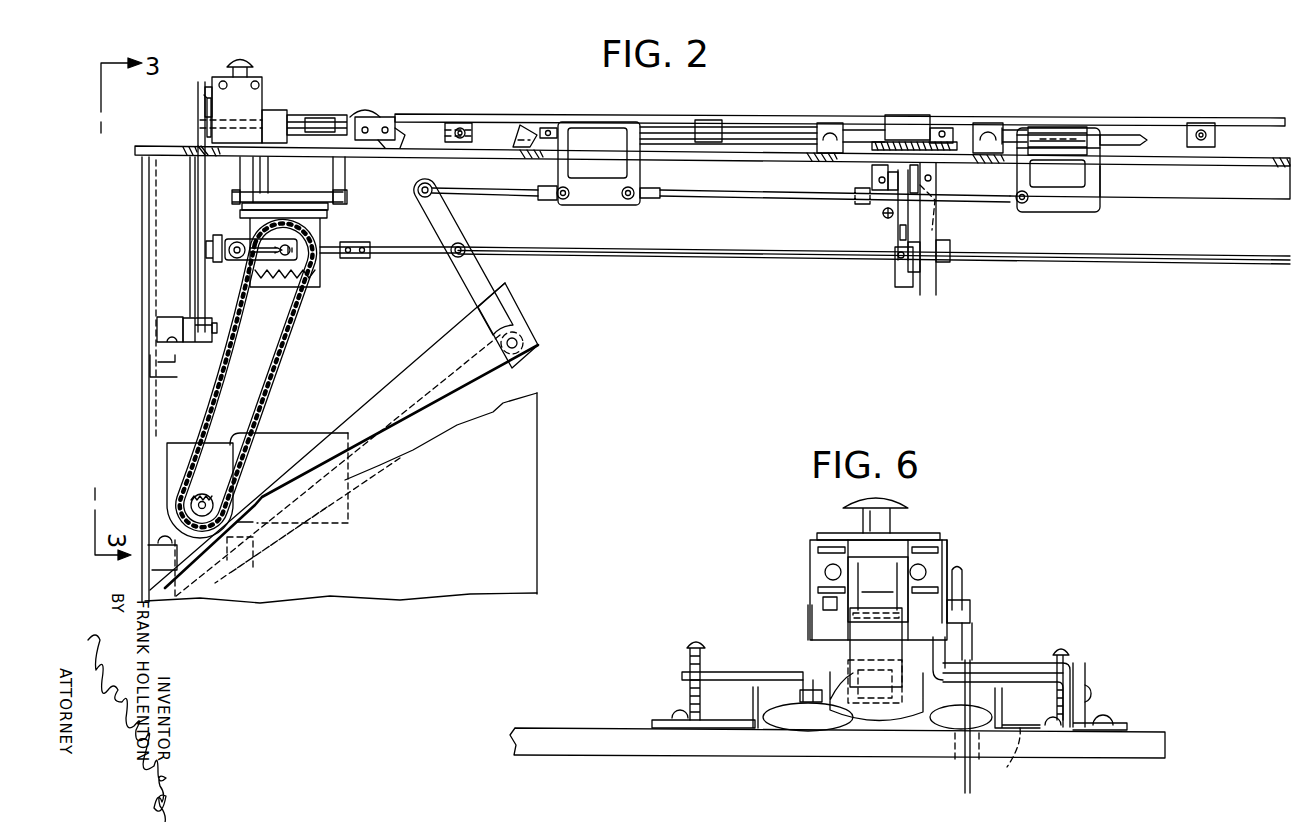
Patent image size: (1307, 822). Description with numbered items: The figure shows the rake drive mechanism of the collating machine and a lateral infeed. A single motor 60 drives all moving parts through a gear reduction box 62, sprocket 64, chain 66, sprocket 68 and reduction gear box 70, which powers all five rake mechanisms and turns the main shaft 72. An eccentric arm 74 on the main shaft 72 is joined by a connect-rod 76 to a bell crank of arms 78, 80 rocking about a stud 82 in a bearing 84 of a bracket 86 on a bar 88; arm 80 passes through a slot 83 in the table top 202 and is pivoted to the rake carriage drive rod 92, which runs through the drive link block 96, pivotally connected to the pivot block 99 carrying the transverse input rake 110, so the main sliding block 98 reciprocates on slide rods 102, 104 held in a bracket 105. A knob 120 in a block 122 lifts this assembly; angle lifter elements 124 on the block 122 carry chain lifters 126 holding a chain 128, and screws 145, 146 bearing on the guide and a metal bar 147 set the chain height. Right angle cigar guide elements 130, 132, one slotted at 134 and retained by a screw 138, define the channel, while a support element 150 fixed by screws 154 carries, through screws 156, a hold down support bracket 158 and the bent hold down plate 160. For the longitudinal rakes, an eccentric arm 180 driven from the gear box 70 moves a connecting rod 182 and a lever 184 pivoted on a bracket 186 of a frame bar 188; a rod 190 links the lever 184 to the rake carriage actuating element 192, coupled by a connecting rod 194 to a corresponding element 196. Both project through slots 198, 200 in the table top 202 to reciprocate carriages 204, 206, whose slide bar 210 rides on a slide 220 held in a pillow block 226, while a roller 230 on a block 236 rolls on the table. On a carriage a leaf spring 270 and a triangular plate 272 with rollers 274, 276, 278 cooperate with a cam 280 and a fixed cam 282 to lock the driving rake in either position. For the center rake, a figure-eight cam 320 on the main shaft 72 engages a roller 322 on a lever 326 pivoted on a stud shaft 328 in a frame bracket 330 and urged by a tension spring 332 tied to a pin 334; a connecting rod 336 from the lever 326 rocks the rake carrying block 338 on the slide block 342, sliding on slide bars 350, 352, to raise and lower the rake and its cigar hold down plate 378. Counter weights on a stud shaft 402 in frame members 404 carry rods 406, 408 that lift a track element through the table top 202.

In FIG. 2, the motor 60 is at (350, 433).
In FIG. 2, the gear reduction box 62 is at (170, 482).
In FIG. 2, the sprocket 64 is at (204, 493).
In FIG. 2, the chain 66 is at (270, 377).
In FIG. 2, the sprocket 68 is at (282, 272).
In FIG. 2, the reduction gear box 70 is at (322, 265).
In FIG. 2, the main shaft 72 is at (752, 262).
In FIG. 2, the eccentric arm 74 is at (236, 242).
In FIG. 2, the connect-rod 76 is at (208, 232).
In FIG. 2, the arm 78 is at (210, 282).
In FIG. 2, the arm 80 is at (198, 200).
In FIG. 6, the arm 80 is at (970, 655).
In FIG. 2, the stud 82 is at (212, 345).
In FIG. 2, the elongated slot 83 is at (198, 148).
In FIG. 6, the elongated slot 83 is at (955, 765).
In FIG. 2, the bearing 84 is at (188, 344).
In FIG. 2, the bracket 86 is at (160, 325).
In FIG. 2, the bar 88 is at (150, 363).
In FIG. 2, the rake carriage drive rod 92 is at (207, 110).
In FIG. 6, the rake carriage drive rod 92 is at (963, 582).
In FIG. 2, the drive link block 96 is at (206, 90).
In FIG. 6, the drive link block 96 is at (972, 610).
In FIG. 2, the main sliding block 98 is at (258, 77).
In FIG. 6, the main sliding block 98 is at (940, 533).
In FIG. 6, the pivot block 99 is at (875, 555).
In FIG. 2, the slide rod 102 is at (222, 81).
In FIG. 6, the slide rod 102 is at (924, 570).
In FIG. 2, the slide rod 104 is at (258, 83).
In FIG. 6, the slide rod 104 is at (830, 570).
In FIG. 2, the bracket 105 is at (270, 100).
In FIG. 6, the transverse input rake 110 is at (825, 730).
In FIG. 2, the knob 120 is at (244, 58).
In FIG. 6, the knob 120 is at (872, 498).
In FIG. 6, the block 122 is at (908, 535).
In FIG. 6, the angle lifter element 124 is at (947, 540).
In FIG. 6, the chain lifter 126 is at (902, 643).
In FIG. 6, the chain 128 is at (806, 684).
In FIG. 6, the cigar guide element 130 is at (753, 700).
In FIG. 6, the cigar guide element 132 is at (1003, 700).
In FIG. 6, the slot 134 is at (1012, 757).
In FIG. 6, the screw 138 is at (1053, 728).
In FIG. 6, the screw 145 is at (690, 645).
In FIG. 6, the screw 146 is at (1062, 652).
In FIG. 6, the metal bar 147 is at (675, 712).
In FIG. 6, the right-angle support element 150 is at (1085, 672).
In FIG. 6, the screw 154 is at (1108, 718).
In FIG. 6, the screw 156 is at (1092, 695).
In FIG. 6, the hold down support bracket 158 is at (1022, 662).
In FIG. 6, the plate 160 is at (860, 720).
In FIG. 2, the eccentric arm 180 is at (272, 270).
In FIG. 2, the connecting rod 182 is at (408, 257).
In FIG. 2, the lever 184 is at (468, 292).
In FIG. 2, the bracket 186 is at (538, 332).
In FIG. 2, the frame bar 188 is at (424, 370).
In FIG. 2, the rod 190 is at (485, 193).
In FIG. 2, the rake carriage actuating element 192 is at (640, 172).
In FIG. 2, the connecting rod 194 is at (704, 200).
In FIG. 2, the rake actuating element 196 is at (1095, 177).
In FIG. 2, the slot 198 is at (817, 160).
In FIG. 2, the slot 200 is at (1278, 163).
In FIG. 2, the table top 202 is at (782, 153).
In FIG. 6, the table top 202 is at (577, 726).
In FIG. 2, the carriage 204 is at (520, 114).
In FIG. 2, the carriage 206 is at (1130, 133).
In FIG. 2, the slide bar 210 is at (1075, 127).
In FIG. 2, the slide 220 is at (1012, 132).
In FIG. 2, the pillow block 226 is at (988, 122).
In FIG. 2, the roller 230 is at (462, 127).
In FIG. 2, the block 236 is at (452, 122).
In FIG. 2, the leaf spring 270 is at (358, 117).
In FIG. 2, the plate 272 is at (366, 104).
In FIG. 2, the roller 274 is at (340, 114).
In FIG. 2, the roller 276 is at (386, 126).
In FIG. 2, the roller 278 is at (396, 133).
In FIG. 2, the cam 280 is at (521, 150).
In FIG. 2, the fixed cam 282 is at (385, 148).
In FIG. 2, the cam 320 is at (912, 275).
In FIG. 2, the roller 322 is at (938, 236).
In FIG. 2, the lever 326 is at (898, 226).
In FIG. 2, the stud shaft 328 is at (895, 280).
In FIG. 2, the frame bracket 330 is at (872, 188).
In FIG. 2, the coiled tension spring 332 is at (883, 213).
In FIG. 2, the pin 334 is at (898, 232).
In FIG. 2, the connecting rod 336 is at (913, 165).
In FIG. 2, the block 338 is at (933, 128).
In FIG. 2, the slide block 342 is at (942, 208).
In FIG. 2, the slide bar 350 is at (931, 178).
In FIG. 2, the slide bar 352 is at (872, 181).
In FIG. 2, the cigar hold down plate 378 is at (893, 115).
In FIG. 2, the stud shaft 402 is at (348, 200).
In FIG. 2, the frame member 404 is at (240, 178).
In FIG. 2, the rod 406 is at (268, 172).
In FIG. 2, the rod 408 is at (346, 172).